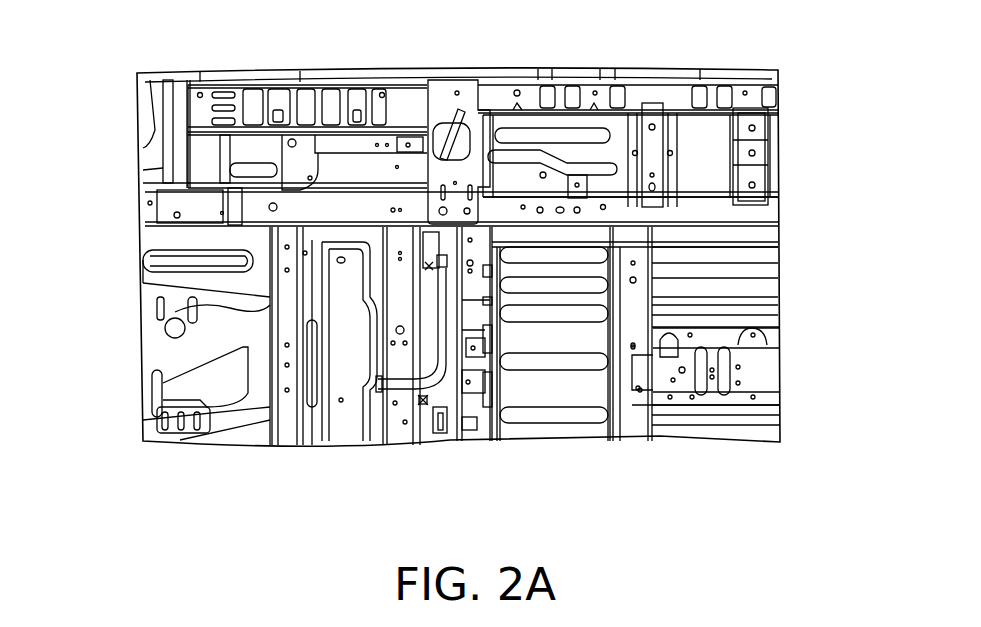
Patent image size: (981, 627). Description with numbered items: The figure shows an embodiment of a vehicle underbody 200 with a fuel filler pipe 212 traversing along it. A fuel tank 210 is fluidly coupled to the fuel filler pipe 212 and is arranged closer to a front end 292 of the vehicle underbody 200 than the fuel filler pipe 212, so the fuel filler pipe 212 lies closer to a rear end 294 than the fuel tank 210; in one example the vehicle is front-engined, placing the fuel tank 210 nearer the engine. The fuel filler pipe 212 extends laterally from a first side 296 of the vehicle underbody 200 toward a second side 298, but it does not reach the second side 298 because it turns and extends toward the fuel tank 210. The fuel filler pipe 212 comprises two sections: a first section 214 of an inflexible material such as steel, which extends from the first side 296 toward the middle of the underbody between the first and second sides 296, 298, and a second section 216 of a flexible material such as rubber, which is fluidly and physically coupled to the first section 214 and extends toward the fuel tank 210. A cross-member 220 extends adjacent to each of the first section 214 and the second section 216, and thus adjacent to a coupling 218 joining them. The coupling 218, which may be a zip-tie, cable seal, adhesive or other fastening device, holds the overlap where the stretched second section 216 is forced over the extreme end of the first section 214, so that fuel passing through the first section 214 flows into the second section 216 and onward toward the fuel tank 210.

The vehicle underbody 200 is at (757, 42).
The fuel tank 210 is at (343, 415).
The fuel filler pipe 212 is at (423, 402).
The first section 214 is at (458, 96).
The second section 216 is at (446, 435).
The coupling 218 is at (438, 260).
The cross-member 220 is at (474, 350).
The front end 292 is at (78, 242).
The rear end 294 is at (848, 260).
The first side 296 is at (460, 45).
The second side 298 is at (513, 485).